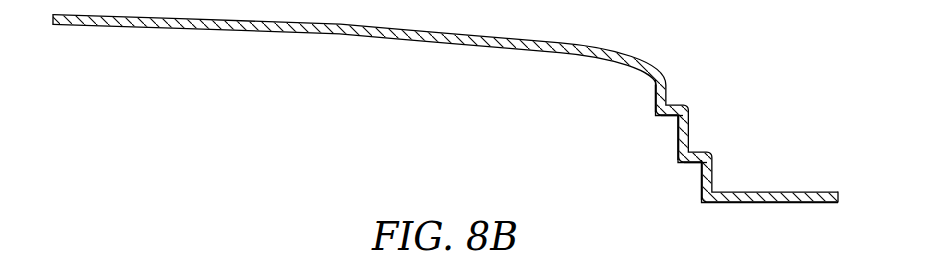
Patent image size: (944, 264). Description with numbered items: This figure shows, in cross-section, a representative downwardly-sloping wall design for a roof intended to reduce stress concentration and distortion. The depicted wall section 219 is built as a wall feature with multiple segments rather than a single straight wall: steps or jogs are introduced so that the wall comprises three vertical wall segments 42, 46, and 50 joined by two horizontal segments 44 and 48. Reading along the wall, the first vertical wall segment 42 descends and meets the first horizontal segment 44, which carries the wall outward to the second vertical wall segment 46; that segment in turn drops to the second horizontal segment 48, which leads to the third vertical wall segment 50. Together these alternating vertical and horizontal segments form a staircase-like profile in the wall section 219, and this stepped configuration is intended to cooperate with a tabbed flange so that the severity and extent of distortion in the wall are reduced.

The wall section 219 is at (817, 160).
The vertical wall segment 42 is at (667, 92).
The horizontal segment 44 is at (681, 104).
The vertical wall segment 46 is at (689, 135).
The horizontal segment 48 is at (706, 153).
The vertical wall segment 50 is at (715, 188).